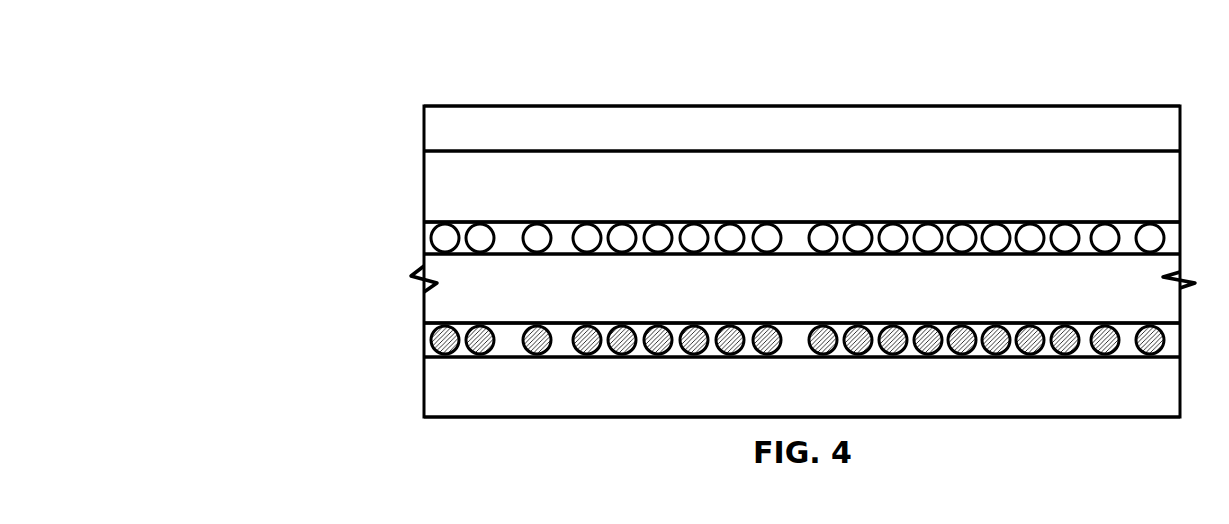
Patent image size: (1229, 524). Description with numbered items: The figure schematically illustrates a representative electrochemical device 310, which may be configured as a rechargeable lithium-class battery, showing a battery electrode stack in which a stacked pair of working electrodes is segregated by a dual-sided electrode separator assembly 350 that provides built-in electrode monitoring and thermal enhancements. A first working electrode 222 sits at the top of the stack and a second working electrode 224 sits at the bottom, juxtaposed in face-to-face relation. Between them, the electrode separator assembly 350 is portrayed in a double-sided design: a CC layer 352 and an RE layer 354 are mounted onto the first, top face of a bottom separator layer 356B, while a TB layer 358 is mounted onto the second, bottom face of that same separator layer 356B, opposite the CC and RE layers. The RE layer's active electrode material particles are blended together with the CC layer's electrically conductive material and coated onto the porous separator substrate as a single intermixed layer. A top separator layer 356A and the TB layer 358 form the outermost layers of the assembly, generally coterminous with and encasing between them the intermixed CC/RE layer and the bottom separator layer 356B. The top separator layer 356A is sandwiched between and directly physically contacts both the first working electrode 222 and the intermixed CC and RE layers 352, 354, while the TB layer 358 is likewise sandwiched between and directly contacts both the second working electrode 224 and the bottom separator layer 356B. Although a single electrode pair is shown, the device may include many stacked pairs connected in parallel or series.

The electrochemical device 310 is at (258, 46).
The first working electrode 222 is at (424, 133).
The top separator layer 356A is at (424, 172).
The electrode separator assembly 350 is at (258, 222).
The CC layer 352 is at (511, 229).
The RE layer 354 is at (428, 238).
The bottom separator layer 356B is at (424, 263).
The TB layer 358 is at (424, 330).
The second working electrode 224 is at (424, 400).